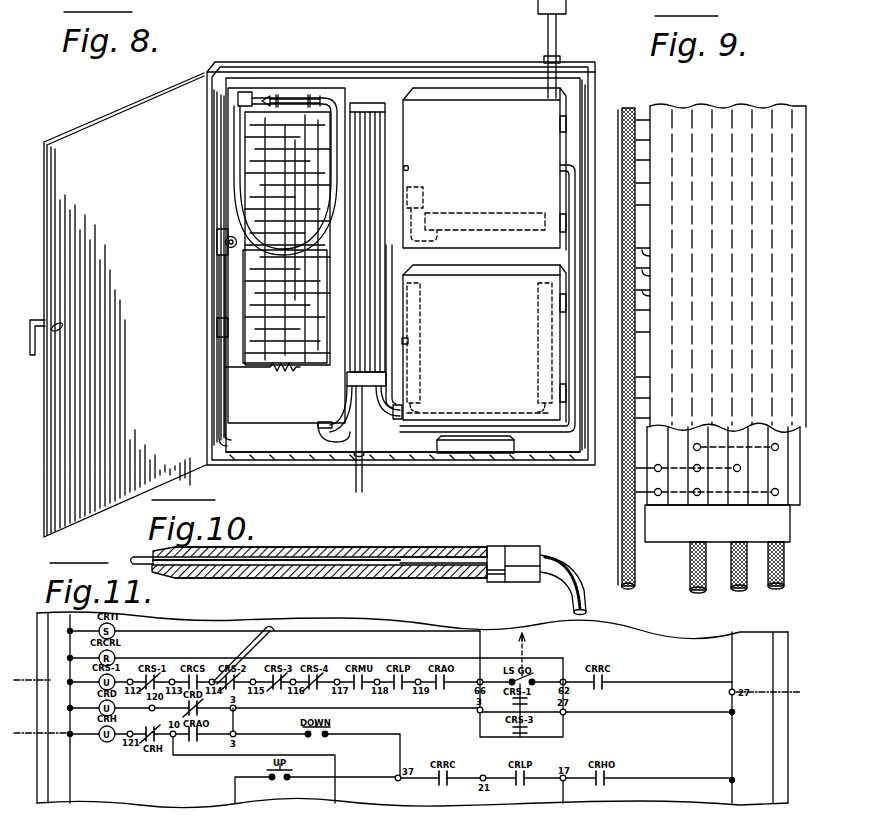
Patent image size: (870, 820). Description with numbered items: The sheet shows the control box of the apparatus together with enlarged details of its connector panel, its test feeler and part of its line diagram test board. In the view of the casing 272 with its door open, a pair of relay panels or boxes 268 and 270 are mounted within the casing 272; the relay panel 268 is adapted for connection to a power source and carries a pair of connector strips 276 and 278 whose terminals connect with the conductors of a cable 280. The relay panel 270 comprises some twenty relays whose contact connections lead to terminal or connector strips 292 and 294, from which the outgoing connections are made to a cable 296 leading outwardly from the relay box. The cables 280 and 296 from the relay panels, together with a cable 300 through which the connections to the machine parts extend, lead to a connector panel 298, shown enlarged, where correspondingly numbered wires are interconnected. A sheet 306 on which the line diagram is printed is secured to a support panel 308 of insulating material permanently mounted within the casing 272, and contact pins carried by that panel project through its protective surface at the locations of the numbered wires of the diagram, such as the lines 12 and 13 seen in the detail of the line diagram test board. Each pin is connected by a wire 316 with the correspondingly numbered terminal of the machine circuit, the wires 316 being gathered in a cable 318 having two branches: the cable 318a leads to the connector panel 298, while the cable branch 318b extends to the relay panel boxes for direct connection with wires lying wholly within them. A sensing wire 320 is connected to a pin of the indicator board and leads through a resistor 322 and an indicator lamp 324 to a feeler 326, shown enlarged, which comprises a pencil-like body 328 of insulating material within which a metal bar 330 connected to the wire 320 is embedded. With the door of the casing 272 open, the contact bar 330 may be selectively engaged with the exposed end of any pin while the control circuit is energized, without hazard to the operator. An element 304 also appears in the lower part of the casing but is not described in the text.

In FIG. 11, the line 12 is at (25, 684).
In FIG. 11, the line 13 is at (25, 741).
In FIG. 8, the relay panel 268 is at (511, 140).
In FIG. 8, the relay panel 270 is at (500, 336).
In FIG. 8, the casing 272 is at (260, 67).
In FIG. 8, the connector strip 276 is at (424, 196).
In FIG. 8, the connector strip 278 is at (490, 217).
In FIG. 8, the cable 280 is at (394, 308).
In FIG. 9, the cable 280 is at (770, 577).
In FIG. 8, the terminal strip 292 is at (414, 372).
In FIG. 8, the terminal strip 294 is at (540, 387).
In FIG. 8, the cable 296 is at (382, 420).
In FIG. 9, the cable 296 is at (738, 573).
In FIG. 8, the connector panel 298 is at (365, 107).
In FIG. 9, the connector panel 298 is at (777, 92).
In FIG. 8, the cable 300 is at (357, 443).
In FIG. 9, the cable 300 is at (693, 570).
In FIG. 8, the terminal block 304 is at (480, 450).
In FIG. 8, the sheet material 306 is at (242, 396).
In FIG. 8, the support panel 308 is at (250, 425).
In FIG. 9, the wire 316 is at (643, 290).
In FIG. 8, the cable 318 is at (316, 442).
In FIG. 8, the cable branch 318a is at (352, 408).
In FIG. 9, the cable branch 318a is at (630, 497).
In FIG. 8, the cable branch 318b is at (543, 432).
In FIG. 8, the sensing wire 320 is at (218, 358).
In FIG. 10, the sensing wire 320 is at (573, 577).
In FIG. 11, the sensing wire 320 is at (275, 636).
In FIG. 8, the resistor 322 is at (217, 327).
In FIG. 8, the indicator lamp 324 is at (225, 250).
In FIG. 8, the feeler 326 is at (292, 97).
In FIG. 10, the feeler 326 is at (408, 586).
In FIG. 11, the feeler 326 is at (227, 675).
In FIG. 10, the pencil-like body 328 is at (250, 578).
In FIG. 10, the metal bar 330 is at (337, 560).